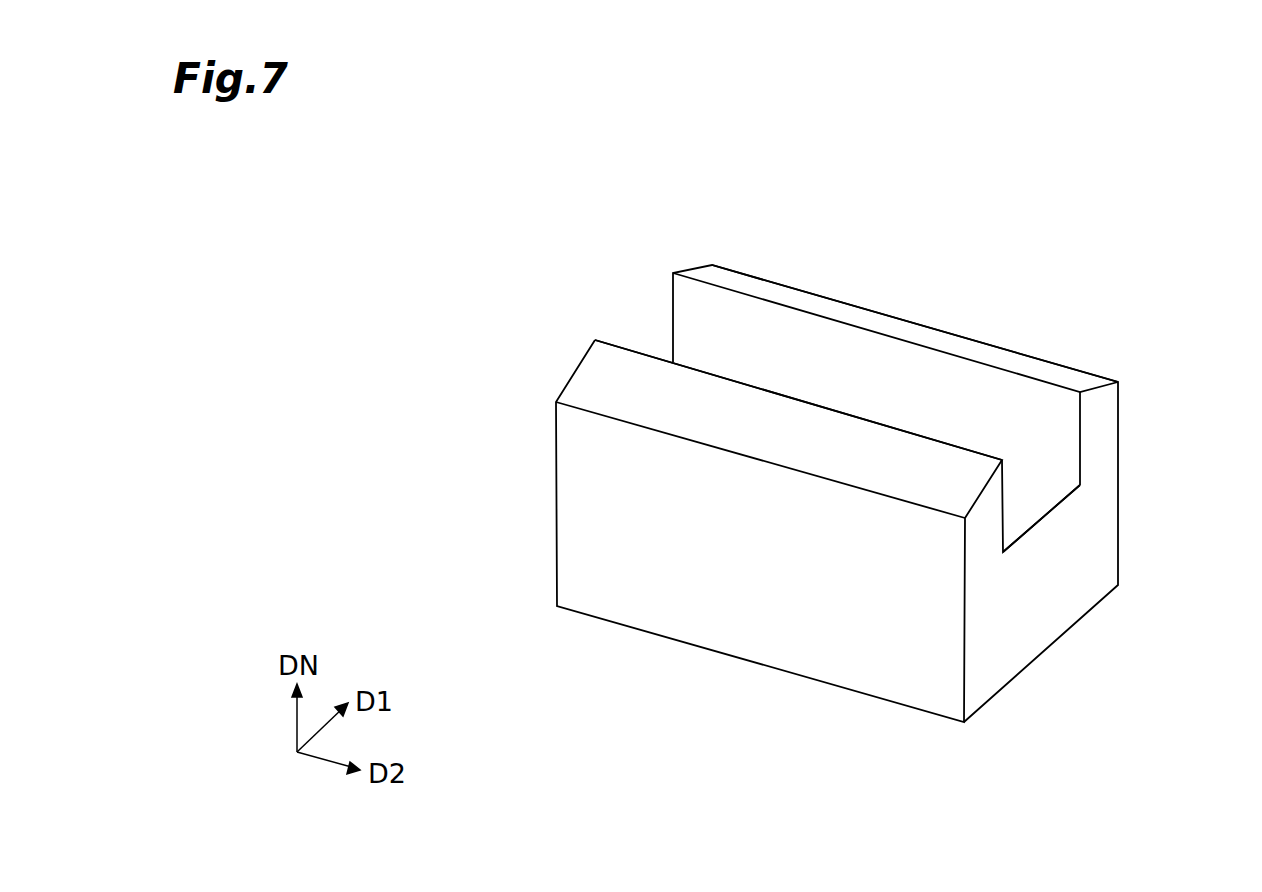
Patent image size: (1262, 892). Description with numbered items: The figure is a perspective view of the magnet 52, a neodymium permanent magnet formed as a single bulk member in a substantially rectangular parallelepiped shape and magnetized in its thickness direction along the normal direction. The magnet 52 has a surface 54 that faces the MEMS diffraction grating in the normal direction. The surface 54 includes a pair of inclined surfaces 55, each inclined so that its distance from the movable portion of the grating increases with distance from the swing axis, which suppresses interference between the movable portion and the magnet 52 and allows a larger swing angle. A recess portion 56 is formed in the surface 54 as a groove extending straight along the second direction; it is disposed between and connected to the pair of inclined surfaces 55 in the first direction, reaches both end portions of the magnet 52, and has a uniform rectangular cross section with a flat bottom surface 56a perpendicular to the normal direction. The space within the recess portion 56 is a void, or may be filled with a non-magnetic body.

The magnet 52 is at (1000, 345).
The surface 54 is at (617, 362).
The inclined surface 55 is at (583, 392).
The recess portion 56 is at (1053, 437).
The bottom surface 56a is at (1028, 498).